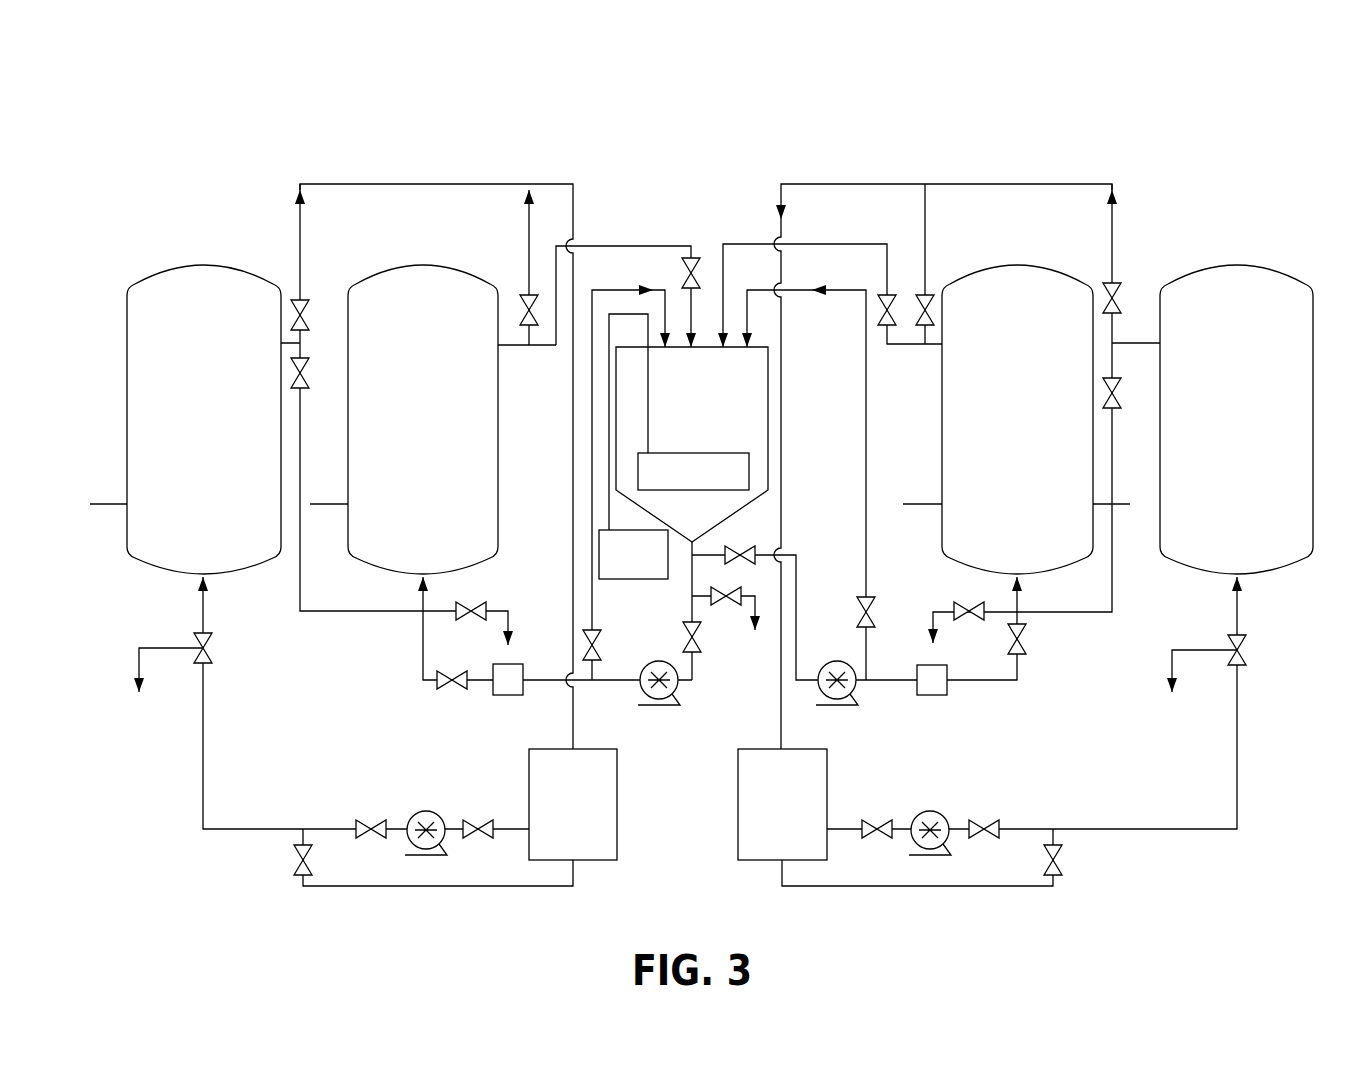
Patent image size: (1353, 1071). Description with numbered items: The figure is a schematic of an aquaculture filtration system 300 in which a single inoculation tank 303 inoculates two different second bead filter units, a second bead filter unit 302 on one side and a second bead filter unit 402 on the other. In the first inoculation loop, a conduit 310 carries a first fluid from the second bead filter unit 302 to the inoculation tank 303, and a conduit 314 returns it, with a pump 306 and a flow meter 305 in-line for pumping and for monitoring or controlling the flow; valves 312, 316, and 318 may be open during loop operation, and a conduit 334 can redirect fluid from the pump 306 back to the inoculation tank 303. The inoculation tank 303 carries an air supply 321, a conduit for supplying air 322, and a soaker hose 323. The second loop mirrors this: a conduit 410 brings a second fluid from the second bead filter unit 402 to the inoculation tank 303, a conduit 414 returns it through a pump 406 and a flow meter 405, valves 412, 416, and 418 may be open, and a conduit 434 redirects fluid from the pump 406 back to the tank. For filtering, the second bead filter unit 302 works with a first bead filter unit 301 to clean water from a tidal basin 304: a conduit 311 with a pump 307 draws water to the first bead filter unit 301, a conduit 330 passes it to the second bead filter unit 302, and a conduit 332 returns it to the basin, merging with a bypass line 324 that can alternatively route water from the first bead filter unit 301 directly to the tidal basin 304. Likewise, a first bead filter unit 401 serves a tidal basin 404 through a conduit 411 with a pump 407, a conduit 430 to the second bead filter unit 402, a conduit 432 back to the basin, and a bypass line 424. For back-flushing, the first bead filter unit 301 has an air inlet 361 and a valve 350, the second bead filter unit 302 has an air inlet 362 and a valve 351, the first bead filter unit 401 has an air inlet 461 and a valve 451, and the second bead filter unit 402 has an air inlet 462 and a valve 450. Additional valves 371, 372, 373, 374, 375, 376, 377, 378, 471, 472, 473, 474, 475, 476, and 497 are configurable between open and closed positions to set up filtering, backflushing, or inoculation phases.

The aquaculture filtration system 300 is at (1120, 120).
The first bead filter unit 301 is at (189, 427).
The second bead filter unit 302 is at (408, 427).
The inoculation tank 303 is at (678, 427).
The tidal basin 304 is at (558, 810).
The flow meter 305 is at (508, 697).
The pump 306 is at (667, 707).
The pump 307 is at (435, 811).
The conduit 310 is at (598, 246).
The conduit 311 is at (226, 829).
The valve 312 is at (698, 262).
The conduit 314 is at (690, 580).
The valve 316 is at (700, 640).
The valve 318 is at (452, 690).
The air supply 321 is at (618, 567).
The conduit for supplying air 322 is at (648, 407).
The soaker hose 323 is at (678, 484).
The bypass line 324 is at (405, 184).
The conduit 330 is at (302, 592).
The conduit 332 is at (527, 258).
The conduit 334 is at (592, 617).
The valve 350 is at (212, 649).
The valve 351 is at (473, 603).
The air inlet 361 is at (108, 504).
The air inlet 362 is at (329, 504).
The valve 371 is at (305, 377).
The valve 372 is at (305, 319).
The valve 373 is at (521, 322).
The valve 374 is at (598, 645).
The valve 375 is at (474, 823).
The valve 376 is at (372, 826).
The valve 377 is at (295, 863).
The valve 378 is at (728, 598).
The first bead filter unit 401 is at (1222, 427).
The second bead filter unit 402 is at (1002, 427).
The tidal basin 404 is at (767, 810).
The flow meter 405 is at (935, 695).
The pump 406 is at (838, 705).
The pump 407 is at (930, 811).
The conduit 410 is at (892, 346).
The conduit 411 is at (1142, 828).
The valve 412 is at (888, 312).
The conduit 414 is at (800, 567).
The valve 416 is at (742, 555).
The valve 418 is at (1023, 637).
The bypass line 424 is at (975, 184).
The conduit 430 is at (1114, 592).
The conduit 432 is at (923, 240).
The conduit 434 is at (867, 572).
The valve 450 is at (1247, 652).
The valve 451 is at (970, 609).
The air inlet 461 is at (918, 504).
The air inlet 462 is at (1142, 504).
The valve 471 is at (1114, 395).
The valve 472 is at (1114, 300).
The valve 473 is at (930, 308).
The valve 474 is at (858, 613).
The valve 475 is at (877, 826).
The valve 476 is at (985, 825).
The valve 497 is at (1057, 862).